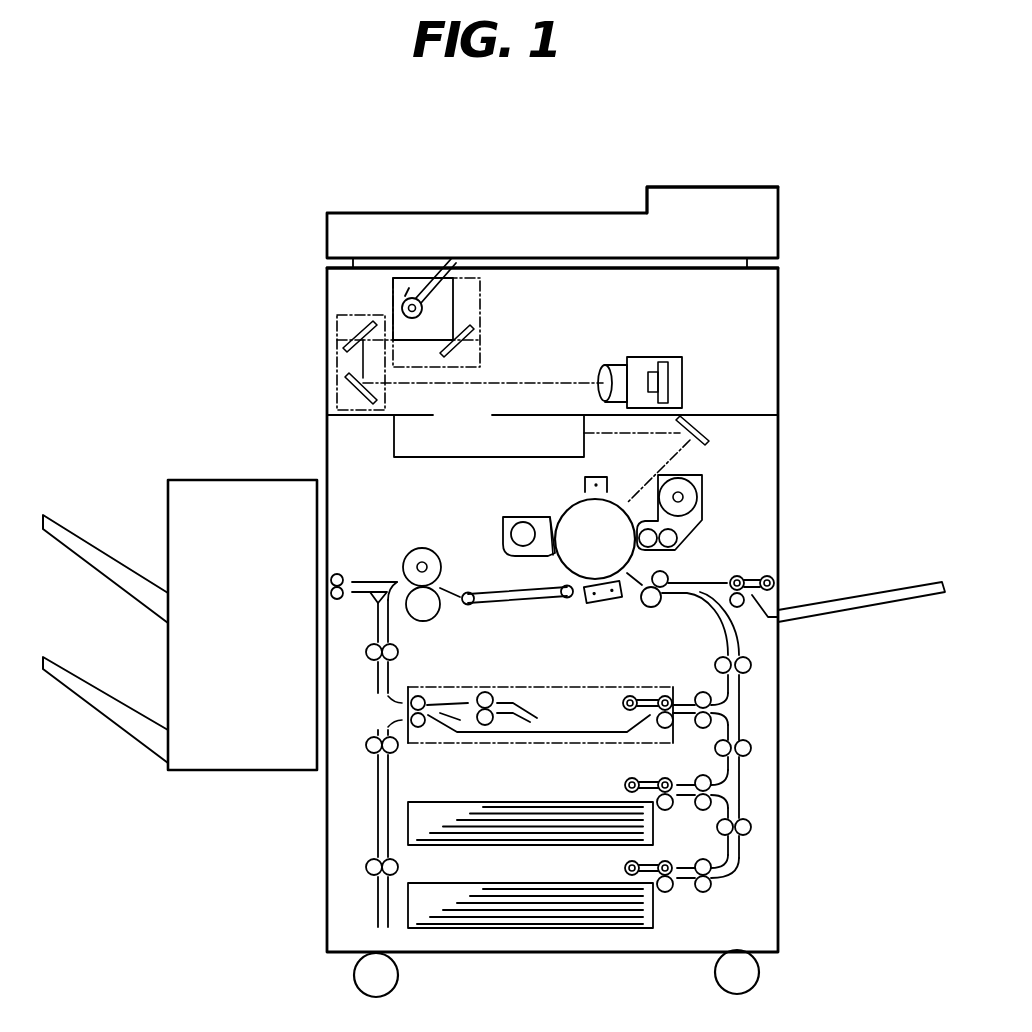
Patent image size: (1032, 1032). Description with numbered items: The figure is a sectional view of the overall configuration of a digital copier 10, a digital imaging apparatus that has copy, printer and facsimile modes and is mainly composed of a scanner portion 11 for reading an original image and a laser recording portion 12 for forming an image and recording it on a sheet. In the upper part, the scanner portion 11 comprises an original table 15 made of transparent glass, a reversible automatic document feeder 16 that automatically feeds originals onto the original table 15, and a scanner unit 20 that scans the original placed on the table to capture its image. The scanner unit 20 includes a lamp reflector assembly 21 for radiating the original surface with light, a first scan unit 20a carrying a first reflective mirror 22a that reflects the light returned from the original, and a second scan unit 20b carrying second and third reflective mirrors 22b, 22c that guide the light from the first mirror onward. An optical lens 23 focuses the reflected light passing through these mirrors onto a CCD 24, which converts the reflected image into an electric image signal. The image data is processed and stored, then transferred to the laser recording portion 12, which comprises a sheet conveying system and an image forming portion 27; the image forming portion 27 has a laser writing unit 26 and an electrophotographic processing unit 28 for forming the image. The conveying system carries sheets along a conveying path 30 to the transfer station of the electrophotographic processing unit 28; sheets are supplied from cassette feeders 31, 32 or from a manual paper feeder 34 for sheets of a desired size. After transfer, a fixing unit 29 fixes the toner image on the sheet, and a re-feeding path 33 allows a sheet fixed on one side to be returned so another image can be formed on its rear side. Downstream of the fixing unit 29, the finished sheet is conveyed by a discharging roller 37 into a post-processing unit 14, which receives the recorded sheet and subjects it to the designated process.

The digital copier 10 is at (854, 396).
The scanner portion 11 is at (779, 318).
The laser recording portion 12 is at (779, 527).
The post-processing unit 14 is at (212, 480).
The original table 15 is at (535, 242).
The reversible automatic document feeder 16 is at (613, 225).
The scanner unit 20 is at (357, 293).
The first scan unit 20a is at (481, 366).
The second scan unit 20b is at (386, 398).
The lamp reflector assembly 21 is at (478, 295).
The first reflective mirror 22a is at (478, 330).
The second reflective mirror 22b is at (350, 342).
The third reflective mirror 22c is at (353, 388).
The optical lens 23 is at (612, 365).
The CCD 24 is at (670, 362).
The laser writing unit 26 is at (452, 458).
The image forming portion 27 is at (724, 469).
The electrophotographic processing unit 28 is at (568, 512).
The fixing unit 29 is at (442, 560).
The paper conveying path 30 is at (375, 582).
The cassette feeder 31 is at (515, 802).
The cassette feeder 32 is at (510, 884).
The re-feeding path 33 is at (518, 687).
The manual paper feeder 34 is at (878, 591).
The discharging roller 37 is at (330, 582).